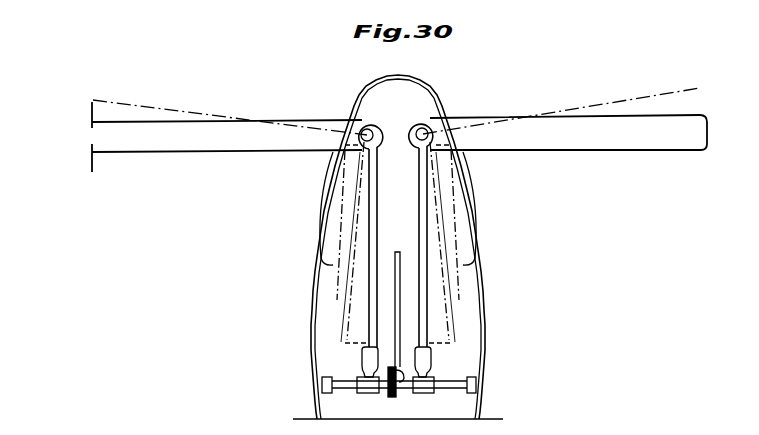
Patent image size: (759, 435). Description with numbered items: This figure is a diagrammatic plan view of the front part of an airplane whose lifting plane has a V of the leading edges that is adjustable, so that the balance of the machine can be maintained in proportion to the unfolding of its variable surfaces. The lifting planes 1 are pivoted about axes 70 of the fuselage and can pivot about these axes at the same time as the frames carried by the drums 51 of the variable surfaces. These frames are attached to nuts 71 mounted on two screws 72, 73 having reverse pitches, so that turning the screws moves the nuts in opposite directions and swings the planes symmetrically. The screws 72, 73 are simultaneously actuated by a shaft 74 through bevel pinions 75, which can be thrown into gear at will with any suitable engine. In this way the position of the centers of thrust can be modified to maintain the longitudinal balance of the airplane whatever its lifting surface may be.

The lifting plane 1 is at (256, 121).
The axis 70 is at (420, 128).
The drum 51 is at (332, 267).
The shaft 74 is at (397, 272).
The screw 73 is at (342, 386).
The screw 72 is at (448, 386).
The nut 71 is at (368, 386).
The bevel pinion 75 is at (396, 388).